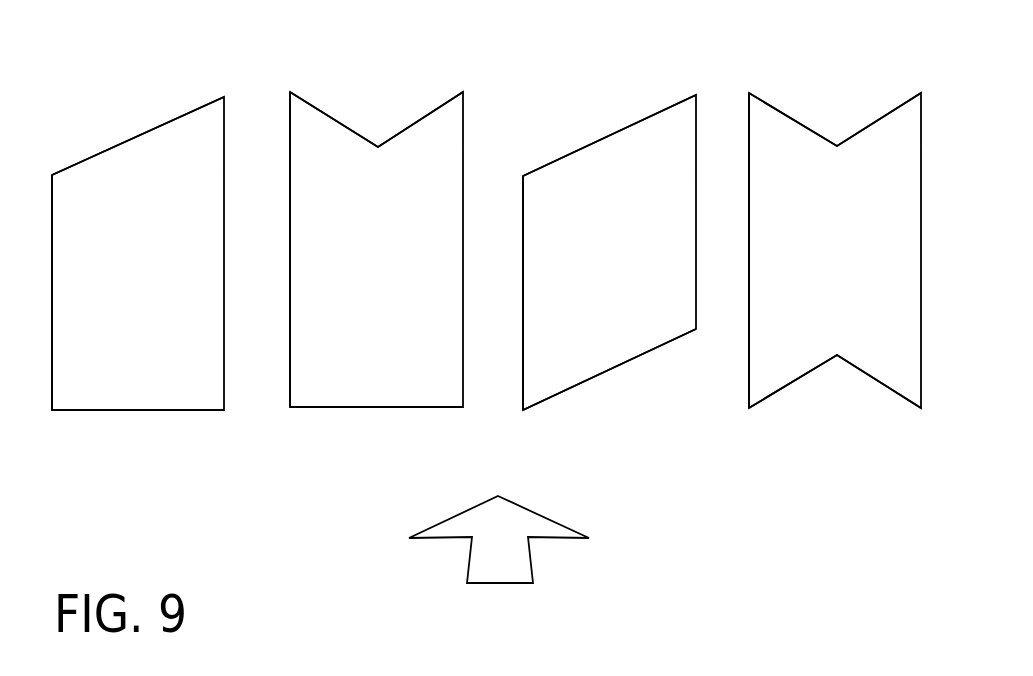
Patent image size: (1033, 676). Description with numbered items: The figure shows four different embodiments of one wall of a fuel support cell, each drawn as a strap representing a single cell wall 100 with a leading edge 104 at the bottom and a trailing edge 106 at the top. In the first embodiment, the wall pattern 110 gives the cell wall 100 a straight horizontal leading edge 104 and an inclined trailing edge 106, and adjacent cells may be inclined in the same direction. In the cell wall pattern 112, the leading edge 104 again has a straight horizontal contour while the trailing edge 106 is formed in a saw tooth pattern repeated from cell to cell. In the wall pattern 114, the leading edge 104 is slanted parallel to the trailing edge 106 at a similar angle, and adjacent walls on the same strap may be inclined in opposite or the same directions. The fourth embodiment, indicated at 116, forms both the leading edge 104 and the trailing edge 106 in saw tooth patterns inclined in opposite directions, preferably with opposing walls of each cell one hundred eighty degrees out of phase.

The cell wall 100 is at (486, 251).
The leading edge 104 is at (486, 412).
The trailing edge 106 is at (486, 111).
The wall pattern 110 is at (53, 377).
The cell wall pattern 112 is at (290, 385).
The wall pattern 114 is at (523, 373).
The side edge of fourth strap 116 is at (748, 329).